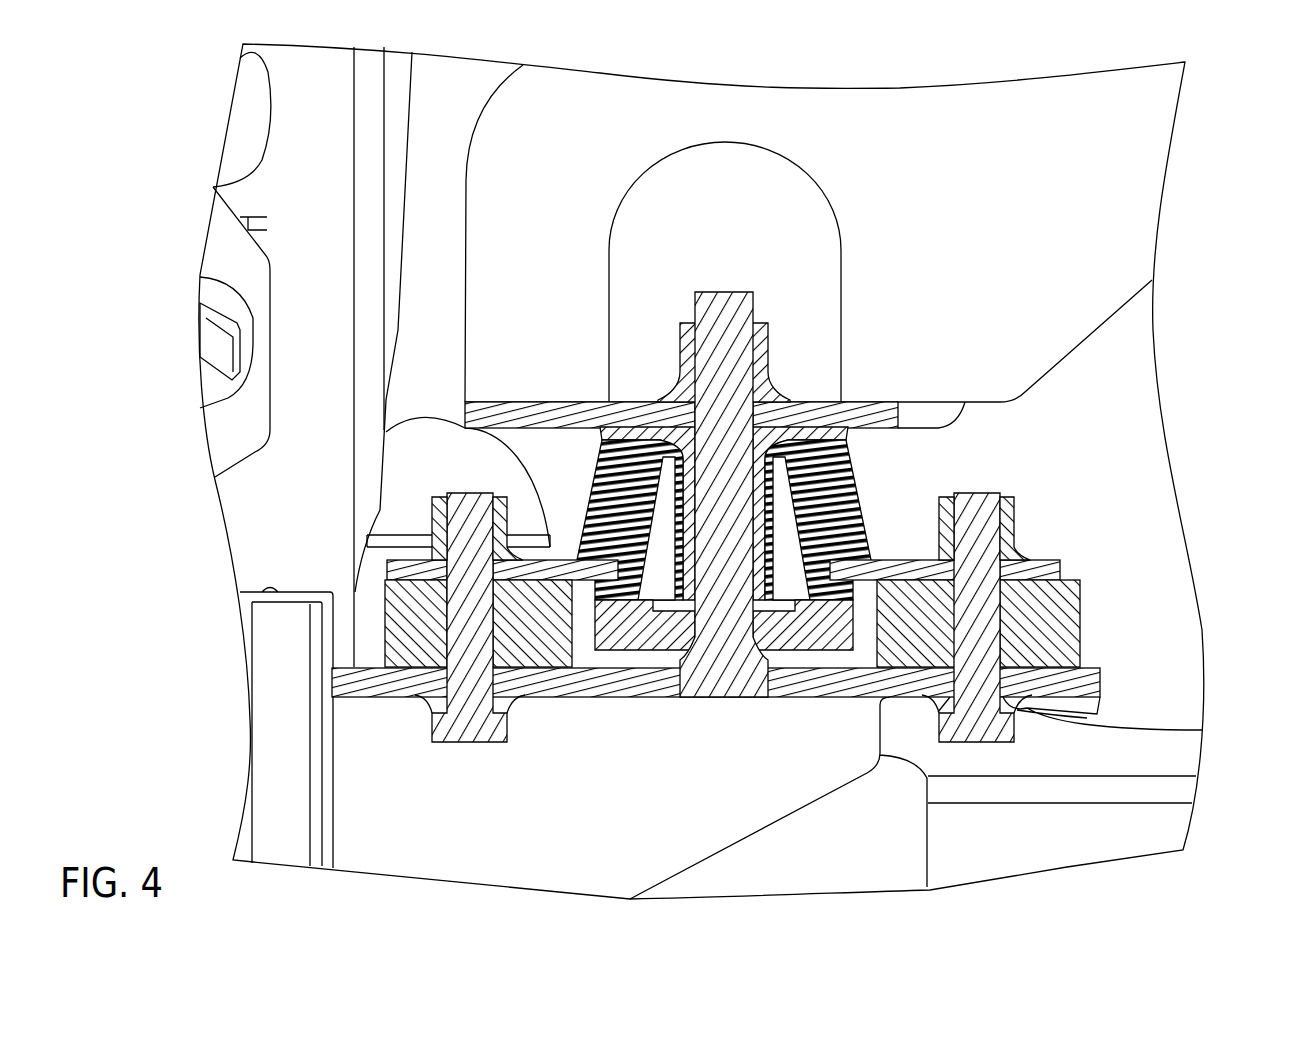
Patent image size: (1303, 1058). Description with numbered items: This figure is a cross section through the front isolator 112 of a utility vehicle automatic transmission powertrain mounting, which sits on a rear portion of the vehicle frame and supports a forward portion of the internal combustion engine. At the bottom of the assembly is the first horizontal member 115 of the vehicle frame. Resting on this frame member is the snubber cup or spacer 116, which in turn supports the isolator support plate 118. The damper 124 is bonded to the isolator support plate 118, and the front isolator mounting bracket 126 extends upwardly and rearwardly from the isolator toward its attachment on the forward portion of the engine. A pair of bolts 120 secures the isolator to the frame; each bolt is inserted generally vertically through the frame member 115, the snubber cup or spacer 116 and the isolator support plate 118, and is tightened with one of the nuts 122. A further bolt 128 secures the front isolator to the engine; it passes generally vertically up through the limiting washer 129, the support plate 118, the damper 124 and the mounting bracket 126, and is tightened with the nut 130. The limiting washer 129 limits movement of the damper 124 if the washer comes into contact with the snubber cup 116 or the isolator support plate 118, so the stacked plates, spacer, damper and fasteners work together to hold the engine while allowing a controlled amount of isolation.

The front isolator 112 is at (734, 262).
The first horizontal member 115 is at (375, 683).
The snubber cup or spacer 116 is at (1047, 633).
The isolator support plate 118 is at (1043, 570).
The bolts 120 is at (427, 560).
The nuts 122 is at (433, 516).
The damper 124 is at (862, 477).
The front isolator mounting bracket 126 is at (1030, 268).
The bolt 128 is at (713, 335).
The limiting washer 129 is at (623, 625).
The nut 130 is at (690, 353).